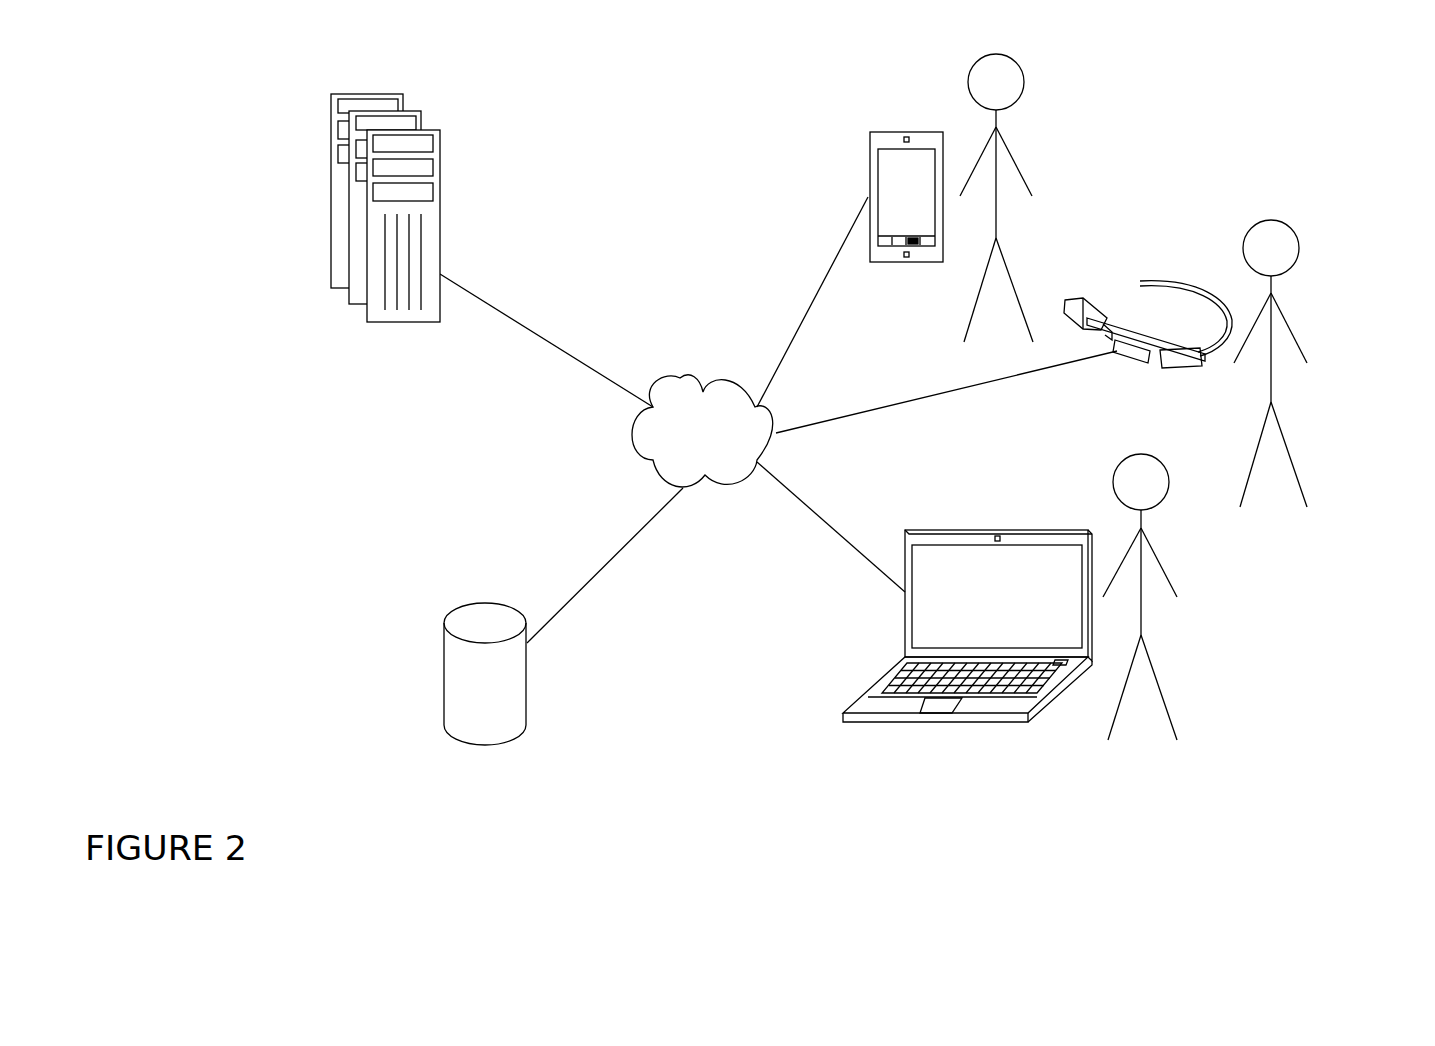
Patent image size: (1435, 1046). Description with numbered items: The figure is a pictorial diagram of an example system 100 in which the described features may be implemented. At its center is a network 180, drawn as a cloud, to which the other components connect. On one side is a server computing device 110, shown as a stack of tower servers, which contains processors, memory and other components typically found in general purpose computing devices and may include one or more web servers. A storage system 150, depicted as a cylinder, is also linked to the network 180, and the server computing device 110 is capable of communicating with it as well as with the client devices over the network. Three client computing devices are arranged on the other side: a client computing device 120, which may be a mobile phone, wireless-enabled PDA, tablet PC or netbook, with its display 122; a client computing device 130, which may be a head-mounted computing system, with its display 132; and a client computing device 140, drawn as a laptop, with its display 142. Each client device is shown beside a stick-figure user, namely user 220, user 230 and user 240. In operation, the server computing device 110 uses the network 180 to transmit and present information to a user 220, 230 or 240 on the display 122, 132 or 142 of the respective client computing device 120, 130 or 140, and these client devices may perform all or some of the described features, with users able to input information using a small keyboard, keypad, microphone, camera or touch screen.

The system 100 is at (185, 804).
The computing device 110 is at (440, 173).
The client computing device 120 is at (849, 197).
The display 122 is at (878, 192).
The client computing device 130 is at (1148, 321).
The display 132 is at (1195, 365).
The client computing device 140 is at (941, 626).
The display 142 is at (907, 640).
The storage system 150 is at (527, 695).
The network 180 is at (702, 431).
The user 220 is at (1025, 183).
The user 230 is at (1300, 352).
The user 240 is at (1168, 585).